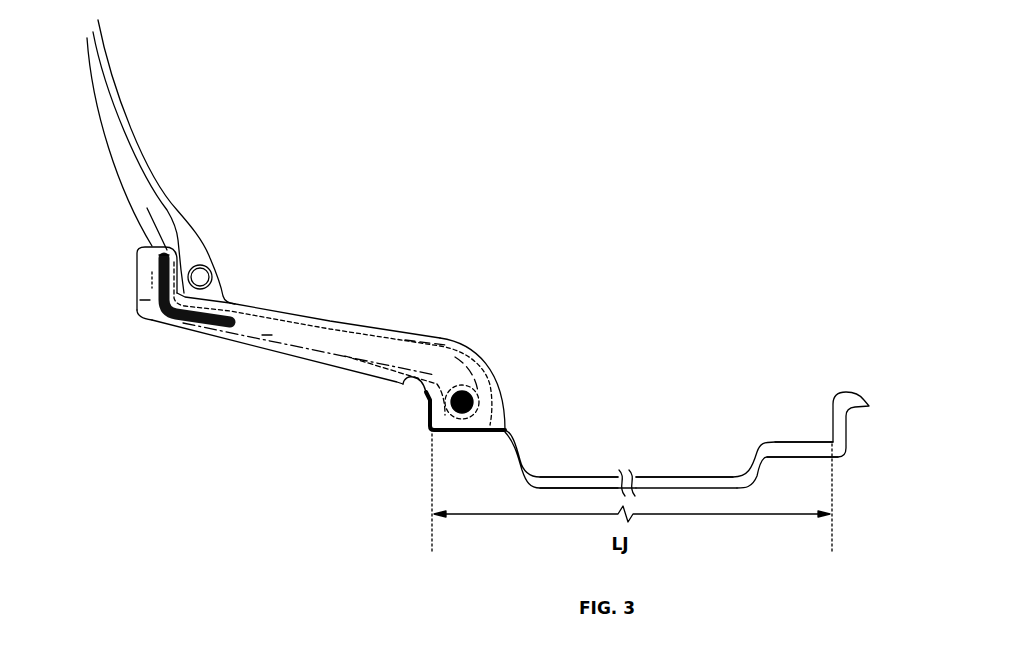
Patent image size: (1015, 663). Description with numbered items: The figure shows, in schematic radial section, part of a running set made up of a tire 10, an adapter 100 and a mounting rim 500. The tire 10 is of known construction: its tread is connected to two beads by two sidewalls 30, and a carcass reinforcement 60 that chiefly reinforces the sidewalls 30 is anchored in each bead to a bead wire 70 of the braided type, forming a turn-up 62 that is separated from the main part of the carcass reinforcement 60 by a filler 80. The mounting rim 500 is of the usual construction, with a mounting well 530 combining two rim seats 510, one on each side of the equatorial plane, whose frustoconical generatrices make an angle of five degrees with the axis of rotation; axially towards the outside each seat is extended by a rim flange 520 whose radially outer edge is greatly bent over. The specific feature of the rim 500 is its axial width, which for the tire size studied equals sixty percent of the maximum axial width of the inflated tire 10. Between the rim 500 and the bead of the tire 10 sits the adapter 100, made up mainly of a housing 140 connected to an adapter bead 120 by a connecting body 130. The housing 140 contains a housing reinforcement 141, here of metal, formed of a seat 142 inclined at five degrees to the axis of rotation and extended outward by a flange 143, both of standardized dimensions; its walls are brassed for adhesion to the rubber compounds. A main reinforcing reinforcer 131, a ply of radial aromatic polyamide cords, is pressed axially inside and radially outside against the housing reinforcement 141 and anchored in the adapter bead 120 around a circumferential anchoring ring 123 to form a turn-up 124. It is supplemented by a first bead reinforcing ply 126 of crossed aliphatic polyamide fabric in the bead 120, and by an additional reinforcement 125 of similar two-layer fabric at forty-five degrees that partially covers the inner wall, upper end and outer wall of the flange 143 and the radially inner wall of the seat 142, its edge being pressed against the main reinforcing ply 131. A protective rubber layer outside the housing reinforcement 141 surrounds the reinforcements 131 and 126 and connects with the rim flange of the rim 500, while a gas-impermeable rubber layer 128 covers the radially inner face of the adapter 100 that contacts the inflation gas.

The tire 10 is at (160, 114).
The sidewall 30 is at (103, 78).
The carcass reinforcement 60 is at (157, 183).
The turn-up 62 is at (142, 220).
The bead wire 70 is at (203, 276).
The filler 80 is at (168, 225).
The adapter 100 is at (376, 298).
The adapter bead 120 is at (488, 383).
The circumferential anchoring ring 123 is at (473, 405).
The turn-up 124 is at (372, 358).
The additional reinforcement 125 is at (262, 335).
The first bead reinforcing ply 126 is at (440, 350).
The layer of gas-impermeable rubber compound 128 is at (295, 323).
The connecting body 130 is at (300, 355).
The main reinforcing reinforcer 131 is at (327, 338).
The housing 140 is at (152, 313).
The housing reinforcement 141 is at (162, 303).
The seat 142 is at (193, 327).
The flange 143 is at (160, 265).
The mounting rim 500 is at (863, 392).
The rim seat 510 is at (472, 437).
The rim flange 520 is at (417, 395).
The well 530 is at (665, 468).